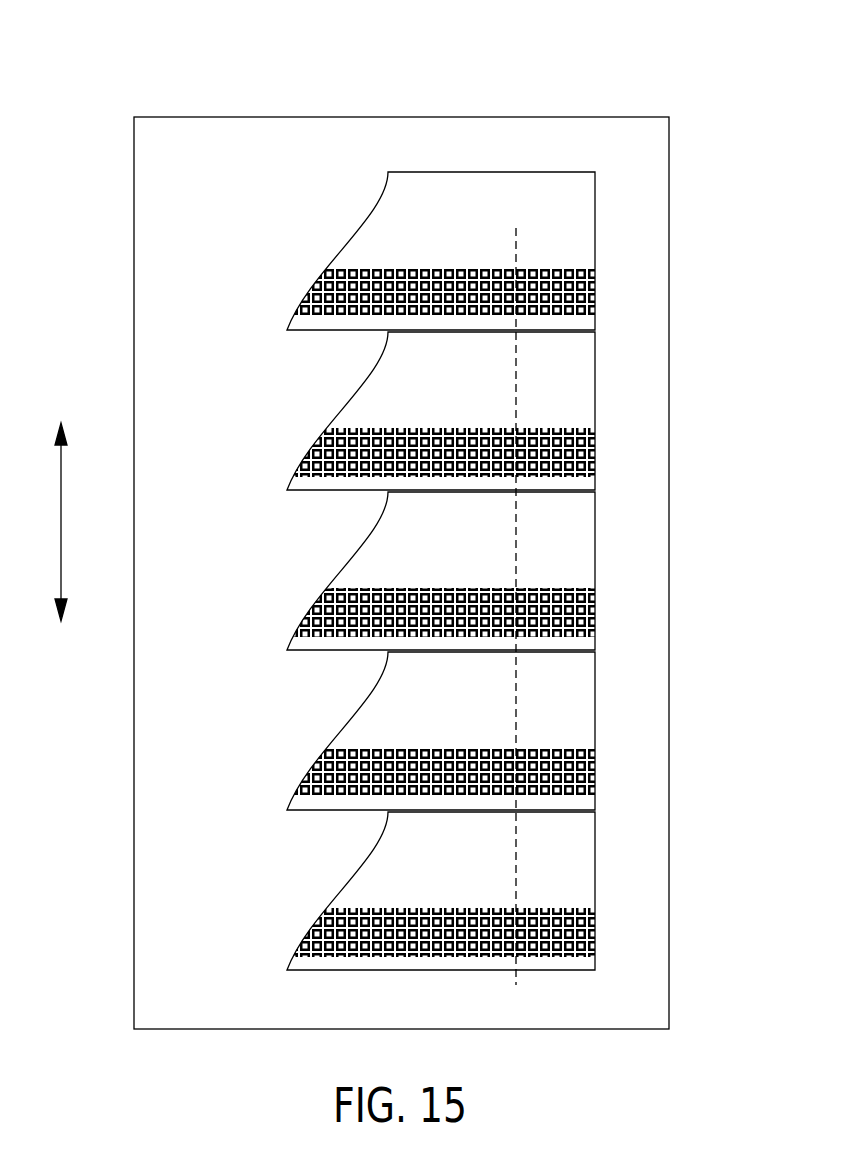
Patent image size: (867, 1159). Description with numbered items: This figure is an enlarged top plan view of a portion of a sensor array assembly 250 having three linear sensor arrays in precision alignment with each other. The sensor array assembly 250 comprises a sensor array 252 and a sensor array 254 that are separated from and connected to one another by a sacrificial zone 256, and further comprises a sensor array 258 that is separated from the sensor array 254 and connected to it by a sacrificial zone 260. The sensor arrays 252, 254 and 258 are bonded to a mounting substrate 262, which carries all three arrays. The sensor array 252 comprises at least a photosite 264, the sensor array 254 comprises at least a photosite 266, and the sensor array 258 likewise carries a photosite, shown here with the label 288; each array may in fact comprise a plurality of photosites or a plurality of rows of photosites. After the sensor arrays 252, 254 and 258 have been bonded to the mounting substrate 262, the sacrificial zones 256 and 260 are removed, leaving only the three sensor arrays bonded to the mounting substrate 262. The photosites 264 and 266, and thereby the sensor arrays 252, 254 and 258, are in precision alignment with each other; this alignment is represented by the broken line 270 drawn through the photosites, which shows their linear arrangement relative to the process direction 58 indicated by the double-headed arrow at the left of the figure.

The sensor array assembly 250 is at (147, 93).
The mounting substrate 262 is at (288, 135).
The sensor array 252 is at (682, 172).
The sacrificial zone 256 is at (682, 332).
The sensor array 254 is at (682, 492).
The sacrificial zone 260 is at (682, 652).
The sensor array 258 is at (682, 812).
The photosite 264 is at (517, 268).
The photosite 266 is at (517, 590).
The perforated region of fifth slat 288 is at (517, 908).
The centerline 270 is at (514, 513).
The process direction 58 is at (60, 520).